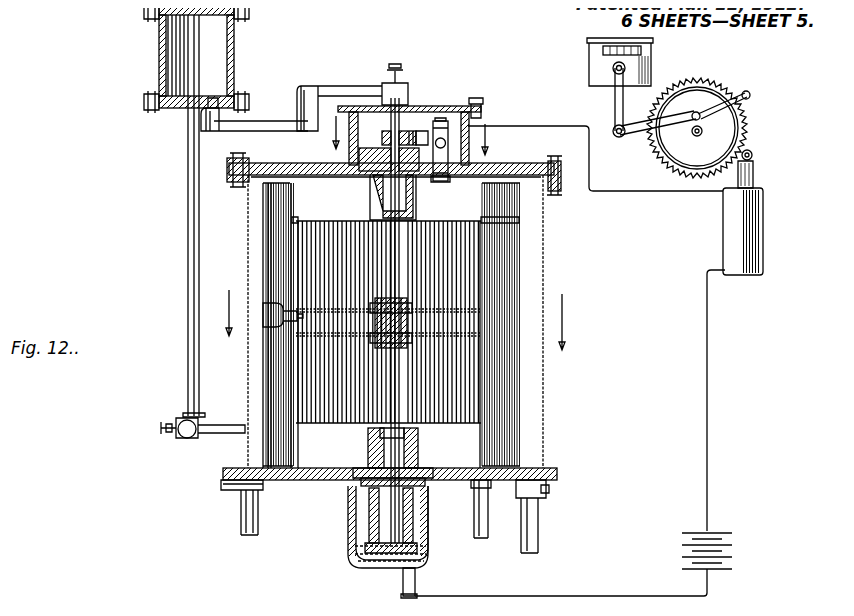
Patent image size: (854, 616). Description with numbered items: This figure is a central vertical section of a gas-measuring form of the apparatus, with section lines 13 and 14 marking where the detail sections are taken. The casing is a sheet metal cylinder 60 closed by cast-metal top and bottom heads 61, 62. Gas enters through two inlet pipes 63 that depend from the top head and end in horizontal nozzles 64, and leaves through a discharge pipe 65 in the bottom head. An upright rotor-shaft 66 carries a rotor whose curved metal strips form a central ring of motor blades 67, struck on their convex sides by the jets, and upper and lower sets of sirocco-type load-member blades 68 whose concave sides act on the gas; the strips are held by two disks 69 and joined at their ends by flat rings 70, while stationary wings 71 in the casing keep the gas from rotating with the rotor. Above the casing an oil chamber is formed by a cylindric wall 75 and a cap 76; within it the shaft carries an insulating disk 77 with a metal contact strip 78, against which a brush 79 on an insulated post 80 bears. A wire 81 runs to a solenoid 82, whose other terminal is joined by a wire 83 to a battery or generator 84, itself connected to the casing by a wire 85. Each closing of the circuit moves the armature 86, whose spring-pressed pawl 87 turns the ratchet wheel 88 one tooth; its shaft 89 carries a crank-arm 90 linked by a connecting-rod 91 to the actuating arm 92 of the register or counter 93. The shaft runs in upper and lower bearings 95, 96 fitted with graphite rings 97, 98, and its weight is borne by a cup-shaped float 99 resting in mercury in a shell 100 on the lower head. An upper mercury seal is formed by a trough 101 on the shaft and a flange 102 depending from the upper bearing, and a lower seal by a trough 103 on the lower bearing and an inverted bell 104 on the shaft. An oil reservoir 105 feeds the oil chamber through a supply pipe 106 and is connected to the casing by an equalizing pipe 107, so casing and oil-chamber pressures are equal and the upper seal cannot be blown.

The section line 13— 13 is at (232, 318).
The section line 14— 14 is at (335, 138).
The sheet metal cylinder 60 is at (528, 255).
The top head 61 is at (548, 172).
The bottom head 62 is at (298, 480).
The inlet pipes 63 is at (268, 248).
The nozzles 64 is at (285, 325).
The discharge pipe 65 is at (480, 535).
The rotor-shaft 66 is at (390, 378).
The motor blades 67 is at (300, 336).
The resistance or load-member blades 68 is at (297, 383).
The disks 69 is at (420, 313).
The flat rings 70 is at (297, 418).
The stationary blades or wings 71 is at (297, 192).
The cylindric wall 75 is at (345, 116).
The cap 76 is at (410, 135).
The disk of insulating material 77 is at (390, 128).
The metal contact strip 78 is at (405, 133).
The spring arm or brush 79 is at (448, 132).
The fixed post 80 is at (445, 135).
The conducting wire 81 is at (520, 128).
The solenoid 82 is at (723, 228).
The conducting wire 83 is at (704, 457).
The battery or generator 84 is at (736, 548).
The wire 85 is at (600, 597).
The core or armature 86 is at (754, 167).
The spring pressed pawl 87 is at (750, 153).
The ratchet wheel 88 is at (700, 103).
The shaft of ratchet wheel 89 is at (692, 136).
The crank-arm 90 is at (700, 116).
The connecting-rod 91 is at (665, 128).
The actuating arm 92 is at (616, 103).
The register or counter 93 is at (588, 68).
The upper bearing 95 is at (383, 158).
The lower bearing 96 is at (420, 480).
The graphite bearing ring 97 is at (388, 178).
The graphite bearing ring 98 is at (372, 486).
The cup-shaped float 99 is at (400, 521).
The cup-shaped shell 100 is at (347, 547).
The annular trough 101 is at (415, 203).
The cylindric flange 102 is at (382, 190).
The annular trough 103 is at (370, 445).
The inverted cup or bell 104 is at (418, 452).
The oil reservoir 105 is at (158, 48).
The supply pipe 106 is at (278, 119).
The equalizing pipe 107 is at (187, 173).